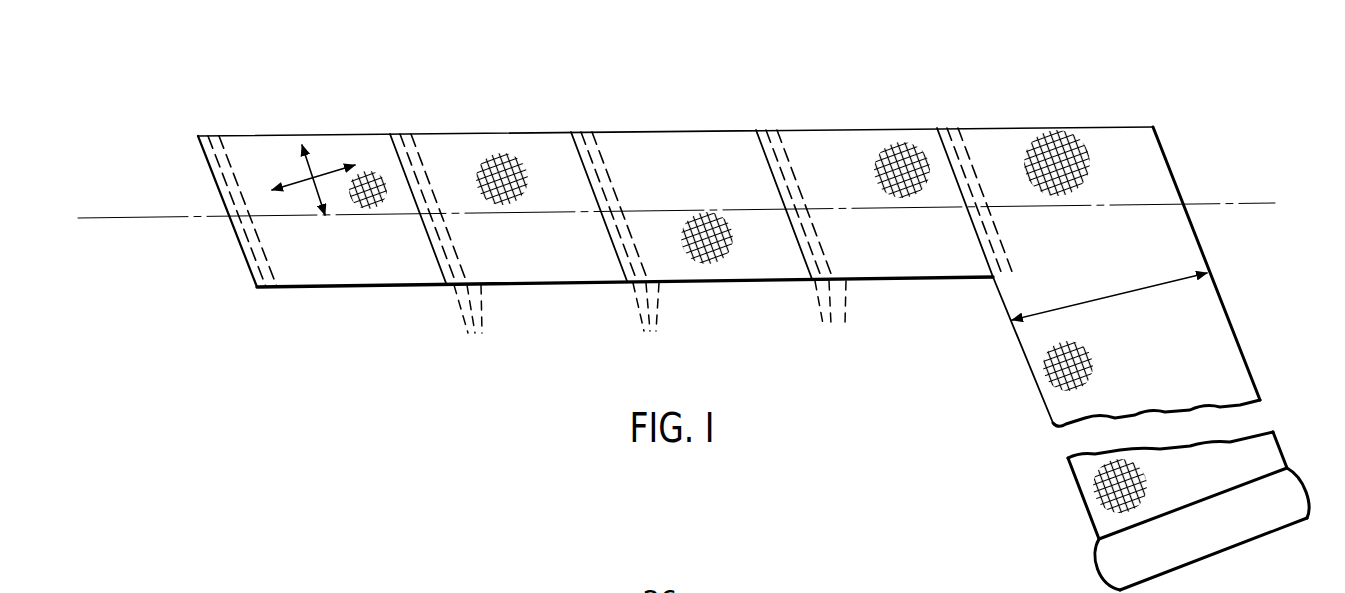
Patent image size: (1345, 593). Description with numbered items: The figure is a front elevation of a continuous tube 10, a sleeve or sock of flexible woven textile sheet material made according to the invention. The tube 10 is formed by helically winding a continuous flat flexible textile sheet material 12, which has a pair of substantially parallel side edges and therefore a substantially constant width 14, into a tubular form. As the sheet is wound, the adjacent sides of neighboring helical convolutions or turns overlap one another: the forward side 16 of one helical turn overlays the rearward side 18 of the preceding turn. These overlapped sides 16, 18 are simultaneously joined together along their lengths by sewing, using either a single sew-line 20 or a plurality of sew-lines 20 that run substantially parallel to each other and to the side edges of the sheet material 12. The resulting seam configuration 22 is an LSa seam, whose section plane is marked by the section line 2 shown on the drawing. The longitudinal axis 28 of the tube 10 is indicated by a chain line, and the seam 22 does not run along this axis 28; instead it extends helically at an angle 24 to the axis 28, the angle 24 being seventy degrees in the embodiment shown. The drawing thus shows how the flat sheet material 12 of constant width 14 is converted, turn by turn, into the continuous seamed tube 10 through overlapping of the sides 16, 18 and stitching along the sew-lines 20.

The section line 2- 2 is at (551, 206).
The continuous tube 10 is at (461, 106).
The textile sheet material 12 is at (1170, 261).
The width 14 is at (1140, 290).
The forward side 16 is at (787, 168).
The rearward side 18 is at (806, 162).
The sew-line 20 is at (654, 322).
The seam configuration 22 is at (390, 128).
The angle 24 is at (400, 172).
The longitudinal axis 28 is at (167, 217).